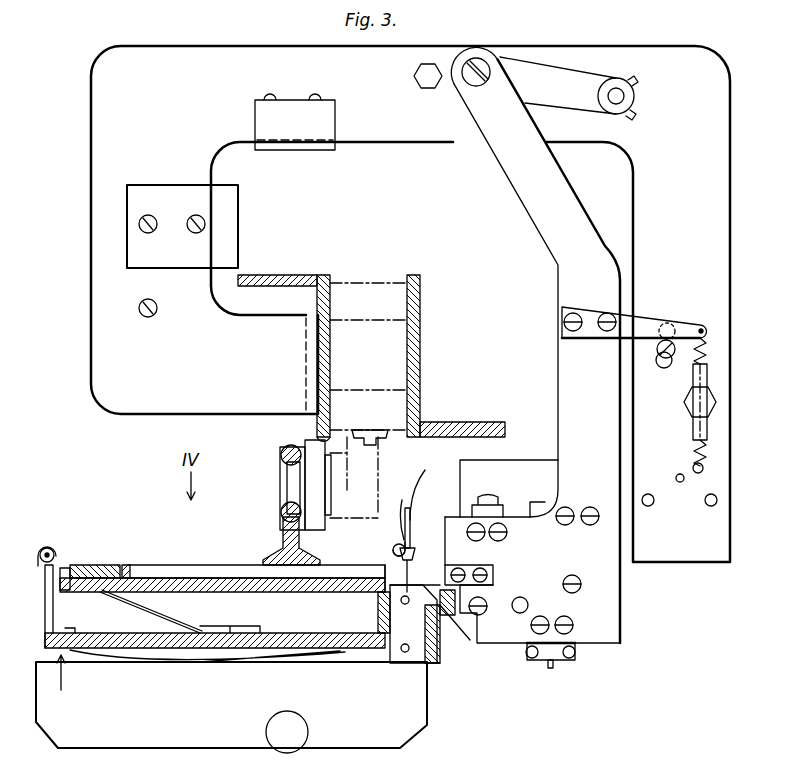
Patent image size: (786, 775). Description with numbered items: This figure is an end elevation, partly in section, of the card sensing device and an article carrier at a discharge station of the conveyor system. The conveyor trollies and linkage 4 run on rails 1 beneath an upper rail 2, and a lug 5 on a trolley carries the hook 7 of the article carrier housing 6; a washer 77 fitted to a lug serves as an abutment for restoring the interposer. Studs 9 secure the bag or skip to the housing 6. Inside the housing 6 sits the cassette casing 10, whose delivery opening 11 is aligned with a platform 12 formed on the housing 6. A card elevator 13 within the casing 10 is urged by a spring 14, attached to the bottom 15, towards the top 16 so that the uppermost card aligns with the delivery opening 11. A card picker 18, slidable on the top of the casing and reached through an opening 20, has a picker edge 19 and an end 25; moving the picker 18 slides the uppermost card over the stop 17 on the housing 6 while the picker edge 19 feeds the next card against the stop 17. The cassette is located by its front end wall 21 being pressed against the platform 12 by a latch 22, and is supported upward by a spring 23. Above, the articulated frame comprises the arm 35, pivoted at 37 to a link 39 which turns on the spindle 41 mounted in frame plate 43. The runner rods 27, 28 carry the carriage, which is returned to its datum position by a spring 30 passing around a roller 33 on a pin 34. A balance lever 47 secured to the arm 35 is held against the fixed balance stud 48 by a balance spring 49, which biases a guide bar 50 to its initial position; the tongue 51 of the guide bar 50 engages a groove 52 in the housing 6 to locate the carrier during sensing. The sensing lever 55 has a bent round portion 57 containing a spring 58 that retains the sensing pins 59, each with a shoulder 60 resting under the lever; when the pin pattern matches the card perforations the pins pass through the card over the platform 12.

The rails 1 is at (440, 325).
The upper rail 2 is at (321, 142).
The trollies and linkage 4 is at (318, 424).
The lug 5 is at (283, 487).
The housing 6 is at (410, 715).
The hook 7 is at (282, 453).
The studs 9 is at (268, 720).
The casing 10 is at (152, 636).
The delivery opening 11 is at (385, 592).
The platform 12 is at (395, 588).
The card elevator 13 is at (225, 578).
The spring 14 is at (125, 600).
The bottom 15 is at (148, 648).
The top 16 is at (330, 577).
The stop 17 is at (425, 585).
The card picker 18 is at (90, 565).
The picker edge 19 is at (74, 565).
The opening 20 is at (155, 565).
The front end wall 21 is at (428, 665).
The latch 22 is at (44, 550).
The spring 23 is at (312, 657).
The end of the picker 25 is at (127, 568).
The rod 27 is at (528, 605).
The rod 28 is at (585, 585).
The spring 30 is at (578, 655).
The roller 33 is at (566, 664).
The pin 34 is at (547, 668).
The arm 35 is at (493, 158).
The pivot 37 is at (478, 62).
The link 39 is at (540, 70).
The spindle 41 is at (613, 94).
The frame plate 43 is at (668, 57).
The balance lever 47 is at (658, 320).
The balance stud 48 is at (660, 358).
The balance spring 49 is at (692, 443).
The guide bar 50 is at (460, 598).
The tongue 51 is at (447, 625).
The groove 52 is at (444, 640).
The sensing lever 55 is at (470, 506).
The bent round portion 57 is at (403, 509).
The spring 58 is at (416, 540).
The sensing pins 59 is at (426, 485).
The shoulder 60 is at (420, 552).
The washer 77 is at (282, 515).